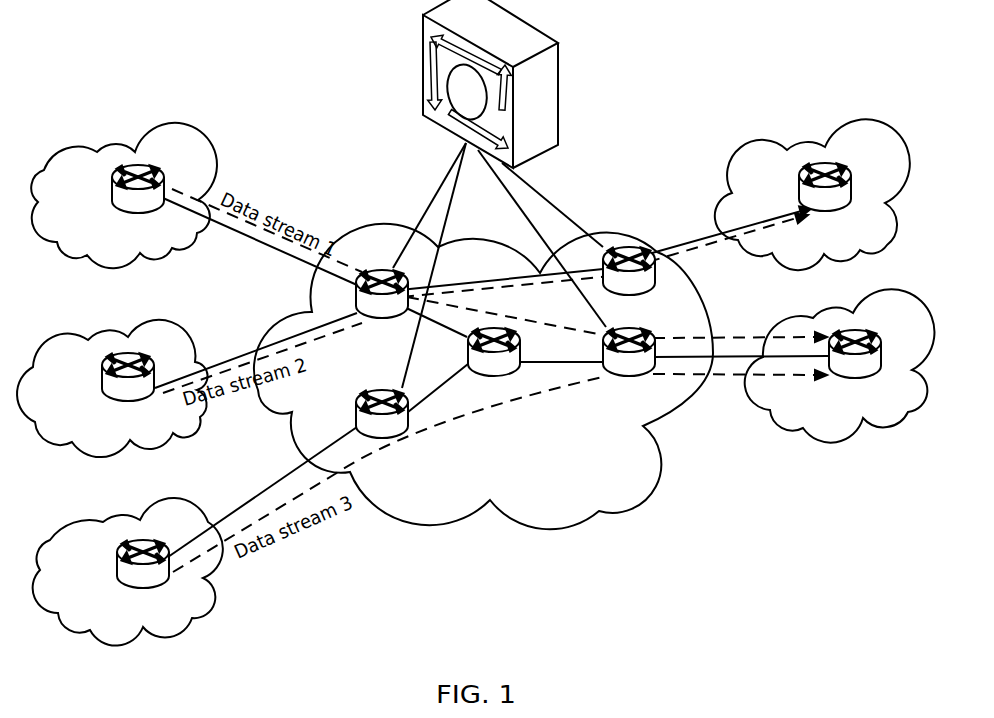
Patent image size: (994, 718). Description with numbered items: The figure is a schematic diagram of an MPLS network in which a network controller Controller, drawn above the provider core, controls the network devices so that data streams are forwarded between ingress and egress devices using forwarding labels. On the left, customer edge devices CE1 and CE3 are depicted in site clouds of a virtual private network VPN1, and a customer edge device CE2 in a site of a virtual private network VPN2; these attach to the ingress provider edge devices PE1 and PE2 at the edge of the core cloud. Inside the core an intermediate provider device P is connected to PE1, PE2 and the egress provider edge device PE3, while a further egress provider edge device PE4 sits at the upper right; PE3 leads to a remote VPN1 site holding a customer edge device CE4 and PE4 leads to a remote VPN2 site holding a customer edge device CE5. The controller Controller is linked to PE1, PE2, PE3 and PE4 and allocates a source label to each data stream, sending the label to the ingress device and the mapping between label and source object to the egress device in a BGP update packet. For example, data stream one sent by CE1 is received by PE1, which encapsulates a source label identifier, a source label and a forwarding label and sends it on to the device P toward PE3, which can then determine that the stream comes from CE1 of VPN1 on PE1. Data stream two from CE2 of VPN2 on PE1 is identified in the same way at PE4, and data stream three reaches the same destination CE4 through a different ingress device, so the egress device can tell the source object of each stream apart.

The customer edge device CE1 is at (146, 203).
The customer edge device CE2 is at (135, 393).
The customer edge device CE3 is at (151, 578).
The customer edge device CE4 is at (864, 370).
The customer edge device CE5 is at (833, 201).
The ingress provider edge device PE1 is at (382, 308).
The provider edge device PE2 is at (389, 432).
The egress provider edge device PE3 is at (629, 370).
The egress provider edge device PE4 is at (630, 286).
The intermediate provider device P is at (494, 367).
The controller Controller is at (530, 95).
The virtual private network VPN1 is at (482, 384).
The virtual private network VPN2 is at (463, 288).